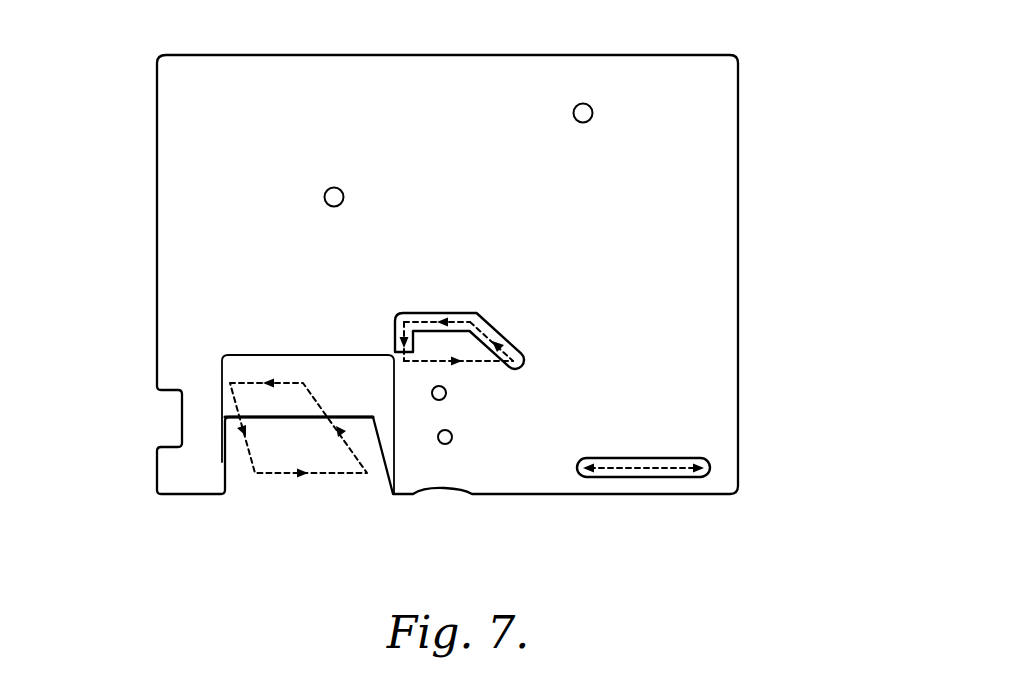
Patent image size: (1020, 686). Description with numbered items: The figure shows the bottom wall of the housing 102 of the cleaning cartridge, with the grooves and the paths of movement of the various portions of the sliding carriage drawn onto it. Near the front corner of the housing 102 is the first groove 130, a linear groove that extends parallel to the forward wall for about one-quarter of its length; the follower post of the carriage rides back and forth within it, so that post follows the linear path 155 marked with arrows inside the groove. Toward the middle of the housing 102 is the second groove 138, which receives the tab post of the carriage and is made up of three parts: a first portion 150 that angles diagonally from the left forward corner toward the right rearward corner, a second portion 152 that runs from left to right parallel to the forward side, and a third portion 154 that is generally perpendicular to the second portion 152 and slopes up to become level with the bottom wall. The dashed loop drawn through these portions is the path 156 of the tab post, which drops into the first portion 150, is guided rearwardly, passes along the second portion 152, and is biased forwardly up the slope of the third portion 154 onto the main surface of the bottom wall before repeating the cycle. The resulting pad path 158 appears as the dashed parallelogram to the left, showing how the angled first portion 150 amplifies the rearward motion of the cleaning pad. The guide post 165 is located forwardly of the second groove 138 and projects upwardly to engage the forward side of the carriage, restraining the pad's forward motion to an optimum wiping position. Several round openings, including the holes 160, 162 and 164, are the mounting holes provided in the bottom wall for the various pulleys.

The housing 102 is at (680, 403).
The first groove 130 is at (690, 477).
The second groove 138 is at (487, 315).
The first portion 150 is at (525, 349).
The second portion 152 is at (447, 312).
The third portion 154 is at (395, 335).
The linear path 155 is at (645, 470).
The path 156 is at (487, 363).
The pad path 158 is at (273, 474).
The hole 160 is at (593, 112).
The hole 162 is at (325, 194).
The hole 164 is at (445, 444).
The guide post 165 is at (437, 400).